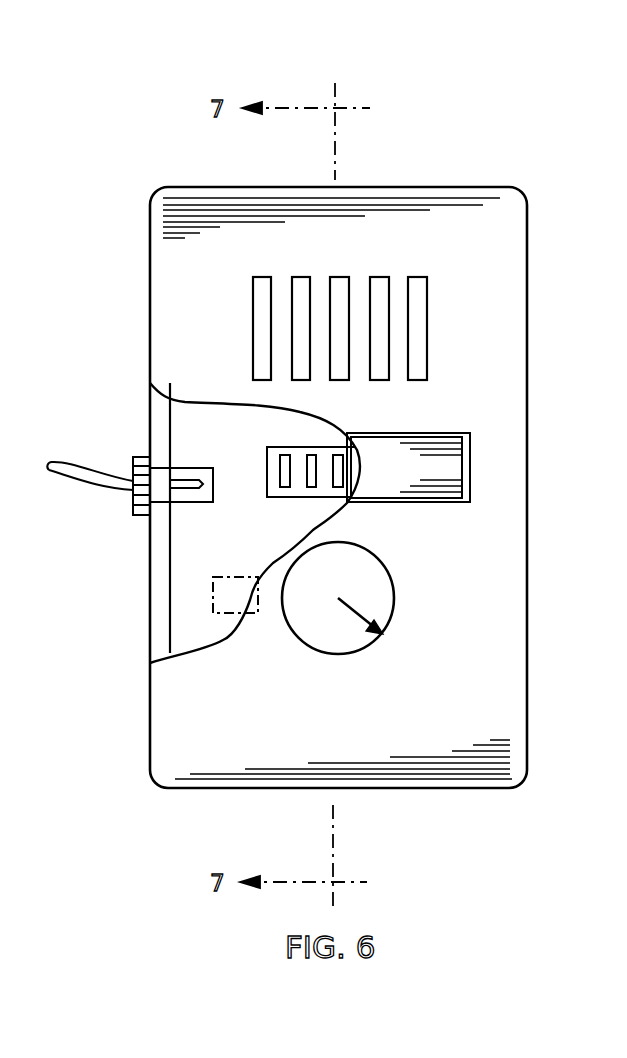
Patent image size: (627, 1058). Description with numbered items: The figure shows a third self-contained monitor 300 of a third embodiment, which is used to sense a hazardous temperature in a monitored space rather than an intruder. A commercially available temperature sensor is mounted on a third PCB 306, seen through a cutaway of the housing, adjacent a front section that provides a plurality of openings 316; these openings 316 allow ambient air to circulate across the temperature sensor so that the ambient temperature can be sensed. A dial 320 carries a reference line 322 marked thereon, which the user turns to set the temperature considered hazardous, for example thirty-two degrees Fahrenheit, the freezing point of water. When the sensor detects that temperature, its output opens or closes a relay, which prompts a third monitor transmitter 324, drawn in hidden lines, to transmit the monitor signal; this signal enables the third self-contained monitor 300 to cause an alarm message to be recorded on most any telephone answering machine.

The third self-contained monitor 300 is at (446, 200).
The third PCB 306 is at (187, 423).
The openings 316 is at (428, 336).
The dial 320 is at (393, 587).
The reference line 322 is at (350, 610).
The third monitor transmitter 324 is at (212, 597).